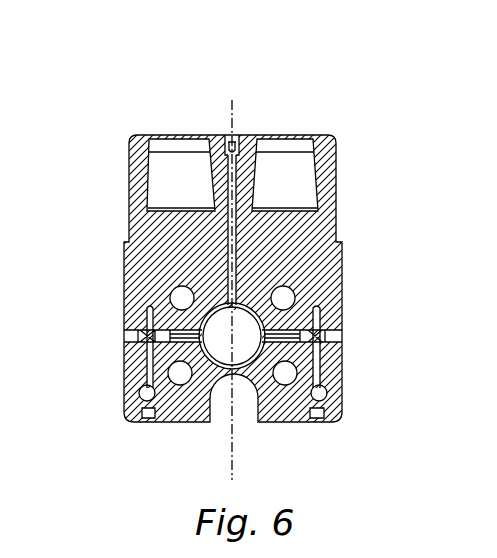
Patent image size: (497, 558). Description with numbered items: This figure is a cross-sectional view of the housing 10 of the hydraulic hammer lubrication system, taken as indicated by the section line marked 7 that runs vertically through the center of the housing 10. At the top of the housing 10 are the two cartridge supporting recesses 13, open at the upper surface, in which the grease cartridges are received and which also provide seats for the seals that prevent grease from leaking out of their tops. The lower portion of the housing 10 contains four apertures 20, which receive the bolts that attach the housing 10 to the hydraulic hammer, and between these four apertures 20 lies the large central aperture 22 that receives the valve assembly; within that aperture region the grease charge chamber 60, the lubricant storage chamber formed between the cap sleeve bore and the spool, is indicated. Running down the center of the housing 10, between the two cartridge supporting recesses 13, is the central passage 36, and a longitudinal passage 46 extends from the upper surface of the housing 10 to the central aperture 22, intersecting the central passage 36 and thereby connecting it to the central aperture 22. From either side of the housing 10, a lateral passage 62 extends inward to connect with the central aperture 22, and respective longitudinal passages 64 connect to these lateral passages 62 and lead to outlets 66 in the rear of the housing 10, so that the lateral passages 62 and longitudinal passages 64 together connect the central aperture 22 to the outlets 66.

The housing 10 is at (327, 115).
The cartridge supporting recess 13 is at (174, 187).
The aperture 20 is at (177, 297).
The central aperture 22 is at (240, 352).
The central passage 36 is at (228, 258).
The longitudinal passage 46 is at (236, 186).
The grease charge chamber 60 is at (201, 321).
The lateral passage 62 is at (187, 338).
The longitudinal passage 64 is at (148, 357).
The outlet 66 is at (141, 395).
The section line 7- 7 is at (228, 97).